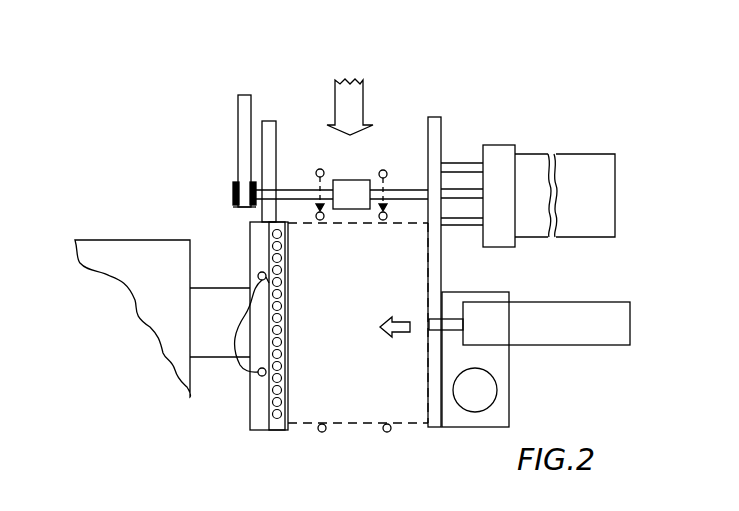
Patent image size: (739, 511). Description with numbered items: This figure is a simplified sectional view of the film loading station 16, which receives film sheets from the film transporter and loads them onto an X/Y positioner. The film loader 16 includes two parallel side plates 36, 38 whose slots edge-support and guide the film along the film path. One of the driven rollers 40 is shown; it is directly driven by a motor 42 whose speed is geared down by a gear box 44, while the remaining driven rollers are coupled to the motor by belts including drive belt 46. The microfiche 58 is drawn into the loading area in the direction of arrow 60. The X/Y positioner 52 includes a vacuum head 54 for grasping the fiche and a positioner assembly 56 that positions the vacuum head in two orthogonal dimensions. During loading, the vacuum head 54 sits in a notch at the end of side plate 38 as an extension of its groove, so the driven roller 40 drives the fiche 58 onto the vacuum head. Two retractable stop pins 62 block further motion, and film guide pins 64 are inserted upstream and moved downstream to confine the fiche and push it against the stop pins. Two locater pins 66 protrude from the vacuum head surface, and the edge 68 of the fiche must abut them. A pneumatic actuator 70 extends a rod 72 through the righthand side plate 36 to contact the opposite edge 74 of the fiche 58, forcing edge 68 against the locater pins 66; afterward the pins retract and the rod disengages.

The film loading station 16 is at (98, 367).
The side plate 36 is at (433, 142).
The side plate 38 is at (274, 142).
The driven roller 40 is at (347, 200).
The motor 42 is at (575, 165).
The gear box 44 is at (498, 158).
The drive belt 46 is at (241, 143).
The X/Y positioner 52 is at (171, 188).
The vacuum head 54 is at (256, 415).
The positioner assembly 56 is at (118, 248).
The microfiche 58 is at (387, 385).
The arrow 60 is at (355, 98).
The retractable stop pins 62 is at (383, 428).
The film guide pins 64 is at (324, 171).
The locater pins 66 is at (258, 372).
The edge of the microfiche 68 is at (268, 245).
The pneumatic actuator 70 is at (560, 317).
The rod 72 is at (451, 327).
The edge of fiche 74 is at (432, 272).